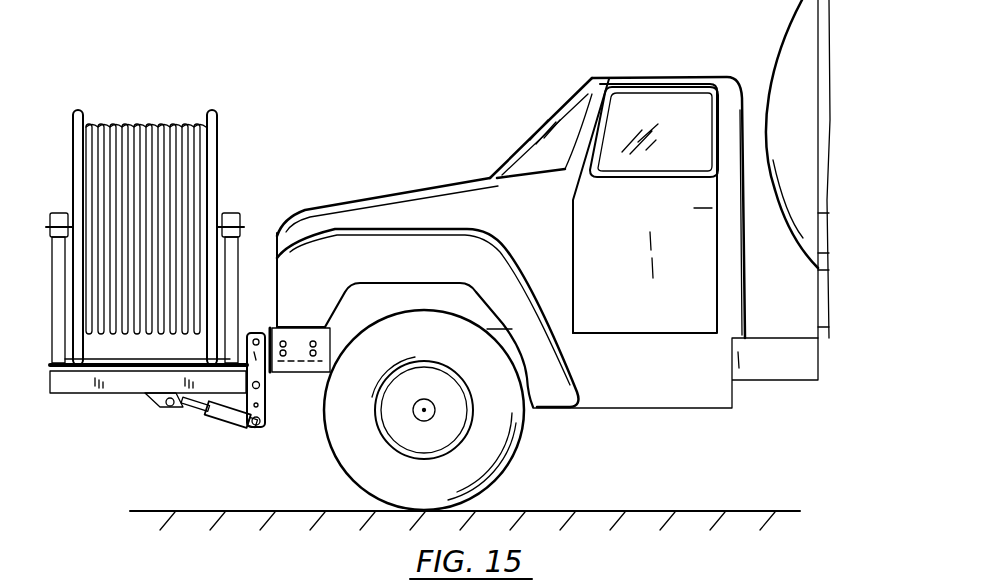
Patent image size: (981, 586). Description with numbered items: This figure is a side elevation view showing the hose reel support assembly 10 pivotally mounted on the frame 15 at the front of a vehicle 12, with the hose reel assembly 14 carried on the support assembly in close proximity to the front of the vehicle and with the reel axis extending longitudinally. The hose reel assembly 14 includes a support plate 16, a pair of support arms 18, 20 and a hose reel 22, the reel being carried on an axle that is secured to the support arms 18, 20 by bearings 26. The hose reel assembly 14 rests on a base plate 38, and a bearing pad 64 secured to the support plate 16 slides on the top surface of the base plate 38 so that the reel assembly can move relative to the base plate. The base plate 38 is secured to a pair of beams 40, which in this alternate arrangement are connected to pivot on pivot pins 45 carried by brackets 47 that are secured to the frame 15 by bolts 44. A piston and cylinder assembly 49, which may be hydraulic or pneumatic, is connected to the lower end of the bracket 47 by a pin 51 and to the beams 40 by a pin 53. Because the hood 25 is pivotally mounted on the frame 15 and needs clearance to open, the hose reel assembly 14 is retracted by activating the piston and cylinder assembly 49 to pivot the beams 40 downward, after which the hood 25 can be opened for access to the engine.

The hose reel support assembly 10 is at (90, 402).
The vehicle 12 is at (672, 33).
The hose reel assembly 14 is at (152, 68).
The frame 15 is at (350, 313).
The support plate 16 is at (110, 350).
The support arm 18 is at (53, 283).
The support arm 20 is at (237, 246).
The hose reel 22 is at (215, 112).
The hood 25 is at (417, 183).
The bearings 26 is at (52, 212).
The base plate 38 is at (147, 362).
The beams 40 is at (62, 384).
The bolts 44 is at (256, 336).
The pivot pin 45 is at (265, 387).
The bracket 47 is at (270, 406).
The piston and cylinder assembly 49 is at (226, 428).
The pin 51 is at (259, 430).
The pin 53 is at (174, 408).
The bearing pad 64 is at (146, 360).